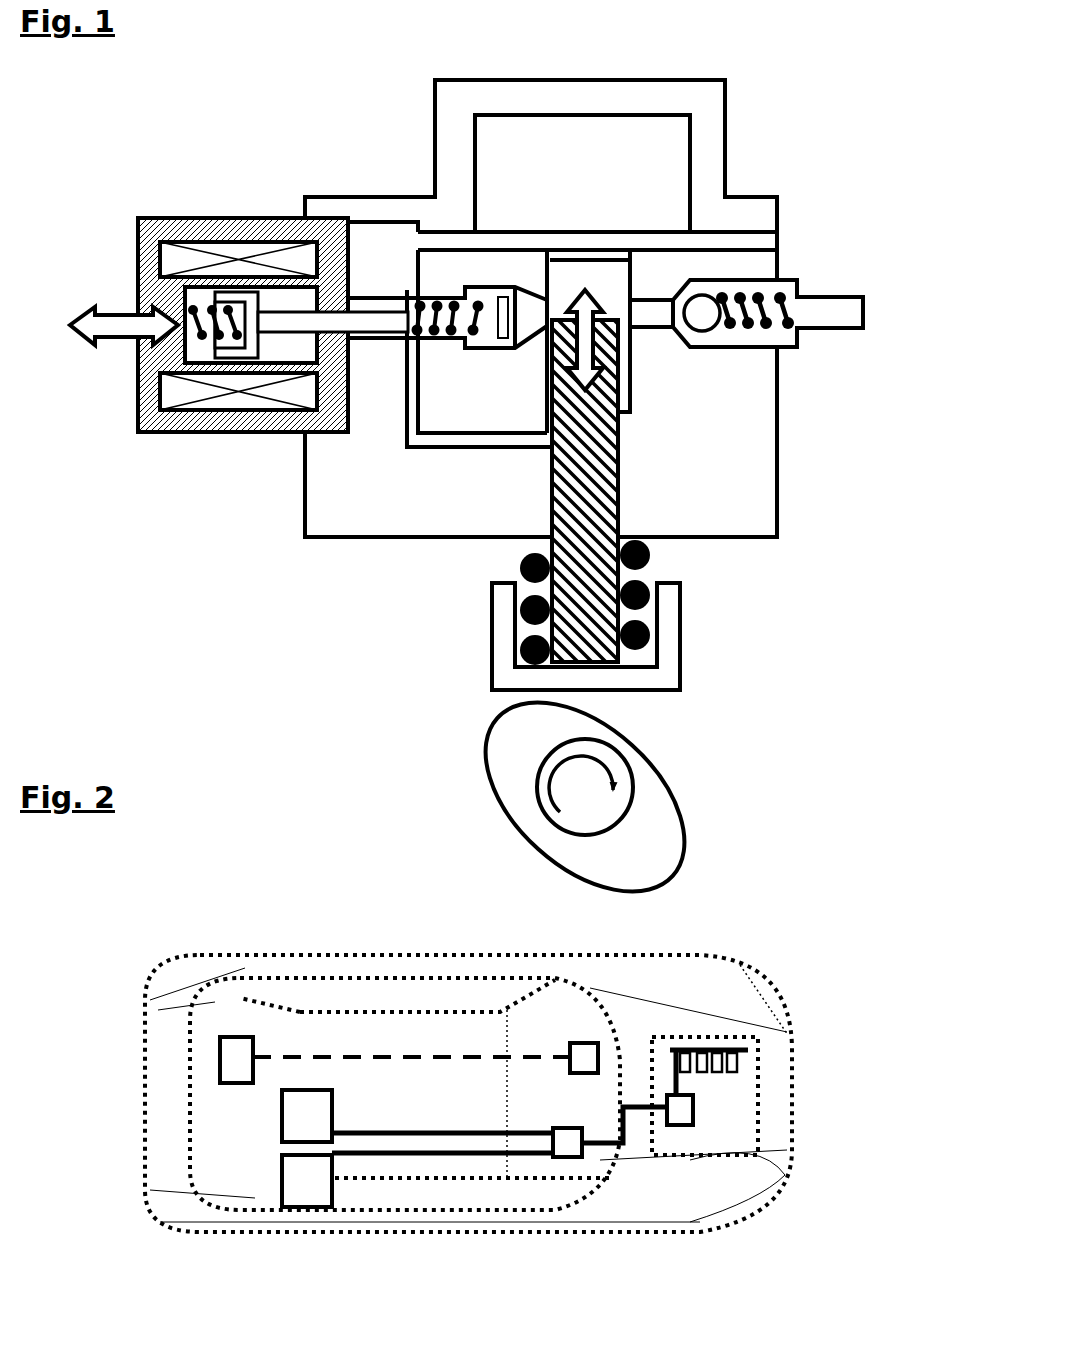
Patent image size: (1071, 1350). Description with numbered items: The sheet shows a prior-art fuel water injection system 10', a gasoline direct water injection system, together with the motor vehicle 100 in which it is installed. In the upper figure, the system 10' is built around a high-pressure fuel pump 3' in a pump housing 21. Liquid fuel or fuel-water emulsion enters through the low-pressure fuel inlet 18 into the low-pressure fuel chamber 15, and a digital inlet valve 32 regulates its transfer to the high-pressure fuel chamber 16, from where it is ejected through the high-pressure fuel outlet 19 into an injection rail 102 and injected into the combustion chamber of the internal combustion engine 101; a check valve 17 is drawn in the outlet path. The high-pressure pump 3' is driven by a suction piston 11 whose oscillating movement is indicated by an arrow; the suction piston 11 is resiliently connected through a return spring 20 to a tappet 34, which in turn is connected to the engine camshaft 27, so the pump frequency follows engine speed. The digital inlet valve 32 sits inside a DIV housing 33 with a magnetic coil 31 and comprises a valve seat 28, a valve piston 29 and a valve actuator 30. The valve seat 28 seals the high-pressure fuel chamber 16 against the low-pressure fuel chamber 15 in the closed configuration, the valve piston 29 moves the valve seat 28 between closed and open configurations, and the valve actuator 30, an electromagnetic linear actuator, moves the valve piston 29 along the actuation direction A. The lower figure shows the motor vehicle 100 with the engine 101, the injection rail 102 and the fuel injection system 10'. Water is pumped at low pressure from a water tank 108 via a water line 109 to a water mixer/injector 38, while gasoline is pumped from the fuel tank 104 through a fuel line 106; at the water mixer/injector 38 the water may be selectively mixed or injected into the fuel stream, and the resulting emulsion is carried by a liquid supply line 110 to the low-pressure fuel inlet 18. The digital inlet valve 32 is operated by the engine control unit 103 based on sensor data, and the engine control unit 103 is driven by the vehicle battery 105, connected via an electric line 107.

In FIG. 1, the fuel water injection system 10' is at (180, 78).
In FIG. 2, the fuel water injection system 10' is at (707, 1184).
In FIG. 1, the pump housing 21 is at (502, 80).
In FIG. 1, the low-pressure fuel chamber 15 is at (635, 132).
In FIG. 1, the low-pressure fuel inlet 18 is at (788, 238).
In FIG. 1, the high-pressure fuel pump 3' is at (636, 356).
In FIG. 1, the suction piston 11 is at (620, 460).
In FIG. 1, the valve seat 28 is at (488, 362).
In FIG. 1, the check valve 17 is at (724, 346).
In FIG. 1, the high-pressure fuel chamber 16 is at (822, 336).
In FIG. 1, the high-pressure fuel outlet 19 is at (868, 312).
In FIG. 1, the digital inlet valve (DIV) 32 is at (190, 218).
In FIG. 1, the magnetic coil 31 is at (230, 250).
In FIG. 1, the DIV housing 33 is at (206, 432).
In FIG. 1, the valve actuator 30 is at (162, 362).
In FIG. 1, the valve piston 29 is at (305, 334).
In FIG. 1, the actuation direction A is at (100, 318).
In FIG. 1, the return spring 20 is at (176, 302).
In FIG. 1, the tappet 34 is at (666, 636).
In FIG. 1, the engine camshaft 27 is at (494, 768).
In FIG. 2, the motor vehicle 100 is at (120, 910).
In FIG. 2, the internal combustion engine 101 is at (772, 1100).
In FIG. 2, the vehicle battery 105 is at (240, 1045).
In FIG. 2, the electric line 107 is at (325, 1050).
In FIG. 2, the engine control unit (ECU) 103 is at (587, 1040).
In FIG. 2, the injection rail 102 is at (728, 1050).
In FIG. 2, the liquid supply line 110 is at (605, 1143).
In FIG. 2, the water mixer/injector 38 is at (566, 1157).
In FIG. 2, the water tank 108 is at (298, 1100).
In FIG. 2, the fuel tank 104 is at (305, 1170).
In FIG. 2, the water line 109 is at (396, 1130).
In FIG. 2, the fuel line 106 is at (462, 1146).